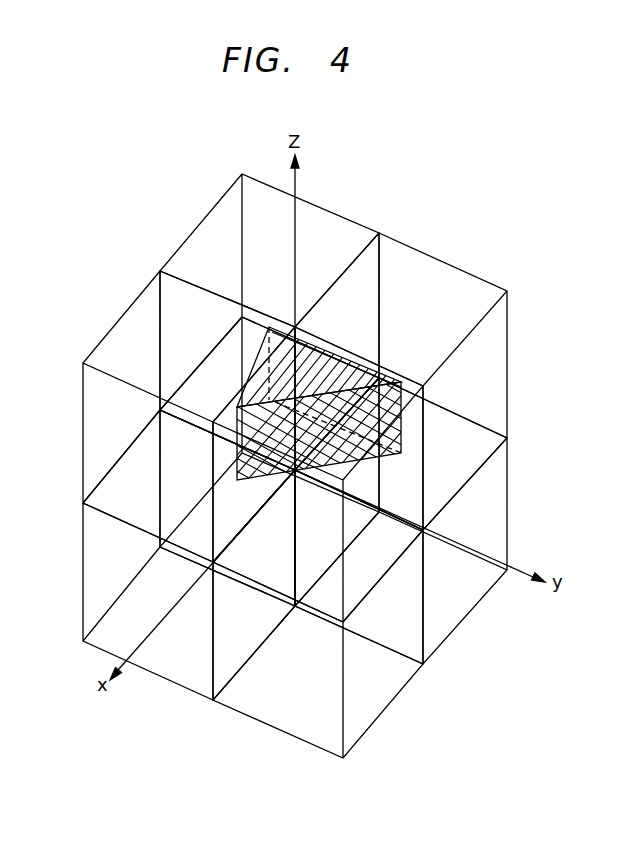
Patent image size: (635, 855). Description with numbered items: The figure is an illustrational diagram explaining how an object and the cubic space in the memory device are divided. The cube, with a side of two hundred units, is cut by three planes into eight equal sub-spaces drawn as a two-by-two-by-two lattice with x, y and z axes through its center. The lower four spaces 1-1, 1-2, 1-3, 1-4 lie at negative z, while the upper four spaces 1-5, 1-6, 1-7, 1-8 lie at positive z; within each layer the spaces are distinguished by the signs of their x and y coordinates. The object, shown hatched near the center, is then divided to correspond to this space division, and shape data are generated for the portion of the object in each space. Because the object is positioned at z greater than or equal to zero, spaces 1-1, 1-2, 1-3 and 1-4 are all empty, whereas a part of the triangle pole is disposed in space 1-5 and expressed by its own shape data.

The divided space 1-1 is at (168, 473).
The divided space 1-2 is at (167, 663).
The divided space 1-3 is at (465, 598).
The divided space 1-4 is at (395, 682).
The divided space 1-5 is at (203, 238).
The divided space 1-6 is at (125, 327).
The divided space 1-7 is at (426, 272).
The divided space 1-8 is at (413, 468).